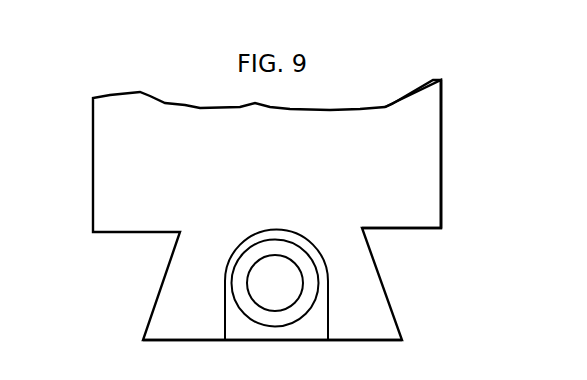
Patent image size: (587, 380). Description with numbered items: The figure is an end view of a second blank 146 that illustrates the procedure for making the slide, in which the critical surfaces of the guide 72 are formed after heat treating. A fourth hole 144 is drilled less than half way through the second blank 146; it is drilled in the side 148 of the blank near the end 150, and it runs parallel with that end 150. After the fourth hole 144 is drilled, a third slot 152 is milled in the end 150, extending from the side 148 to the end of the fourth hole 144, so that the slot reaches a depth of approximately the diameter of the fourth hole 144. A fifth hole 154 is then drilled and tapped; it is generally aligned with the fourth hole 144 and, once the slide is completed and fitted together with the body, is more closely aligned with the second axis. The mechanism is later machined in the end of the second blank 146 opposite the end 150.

The guide 72 is at (399, 316).
The fourth hole 144 is at (318, 252).
The second blank 146 is at (443, 139).
The side 148 is at (400, 170).
The end 150 is at (374, 340).
The third slot 152 is at (226, 325).
The fifth hole 154 is at (262, 246).